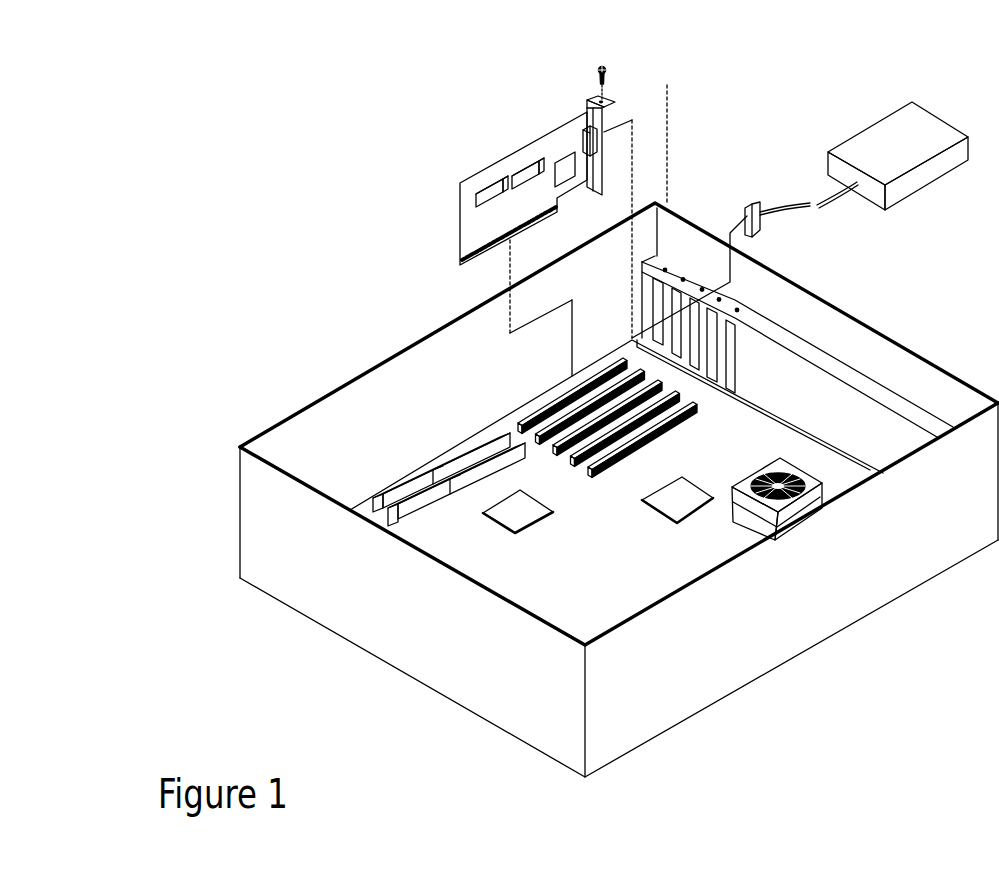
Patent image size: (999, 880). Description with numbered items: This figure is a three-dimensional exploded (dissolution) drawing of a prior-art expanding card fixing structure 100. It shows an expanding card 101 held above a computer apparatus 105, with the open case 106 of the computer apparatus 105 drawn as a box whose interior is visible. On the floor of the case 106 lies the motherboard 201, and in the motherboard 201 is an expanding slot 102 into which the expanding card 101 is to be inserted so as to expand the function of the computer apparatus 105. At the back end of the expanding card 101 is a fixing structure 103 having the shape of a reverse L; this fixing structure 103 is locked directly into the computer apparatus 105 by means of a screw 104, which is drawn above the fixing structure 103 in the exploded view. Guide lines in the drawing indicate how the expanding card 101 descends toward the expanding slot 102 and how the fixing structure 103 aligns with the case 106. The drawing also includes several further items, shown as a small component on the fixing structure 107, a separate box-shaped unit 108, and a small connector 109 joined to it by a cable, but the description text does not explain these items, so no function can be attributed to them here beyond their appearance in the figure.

The expanding card fixing structure 100 is at (886, 60).
The expanding card 101 is at (506, 157).
The expanding slot 102 is at (548, 403).
The fixing structure 103 is at (605, 162).
The screw 104 is at (604, 64).
The computer apparatus 105 is at (367, 372).
The case 106 is at (900, 344).
The connector on bracket 107 is at (605, 133).
The power adapter 108 is at (928, 125).
The power connector 109 is at (751, 201).
The motherboard 201 is at (572, 600).